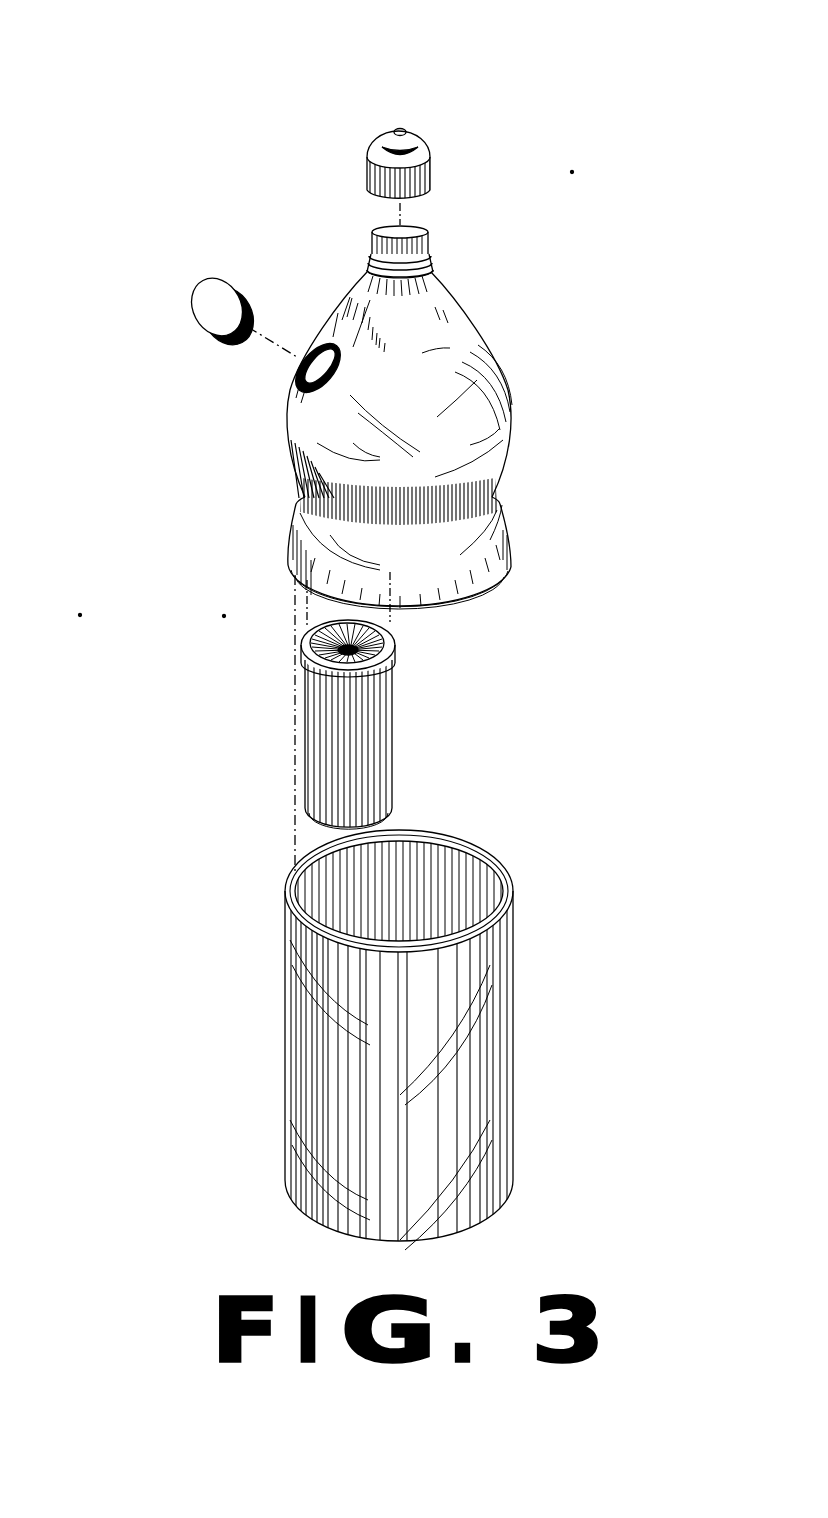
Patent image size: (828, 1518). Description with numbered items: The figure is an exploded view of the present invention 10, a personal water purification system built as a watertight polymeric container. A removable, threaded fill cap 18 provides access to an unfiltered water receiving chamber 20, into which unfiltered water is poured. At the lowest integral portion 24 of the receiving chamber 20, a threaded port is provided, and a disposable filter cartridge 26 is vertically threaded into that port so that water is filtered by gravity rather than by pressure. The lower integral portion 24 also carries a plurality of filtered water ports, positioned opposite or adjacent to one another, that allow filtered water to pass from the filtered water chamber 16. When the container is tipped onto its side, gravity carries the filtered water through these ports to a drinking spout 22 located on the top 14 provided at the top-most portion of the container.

The present invention 10 is at (500, 230).
The top 14 is at (372, 141).
The filtered water chamber 16 is at (511, 977).
The fill cap 18 is at (212, 302).
The unfiltered water receiving chamber 20 is at (482, 353).
The drinking spout 22 is at (420, 133).
The lowest integral portion 24 is at (480, 590).
The disposable filter cartridge 26 is at (396, 740).